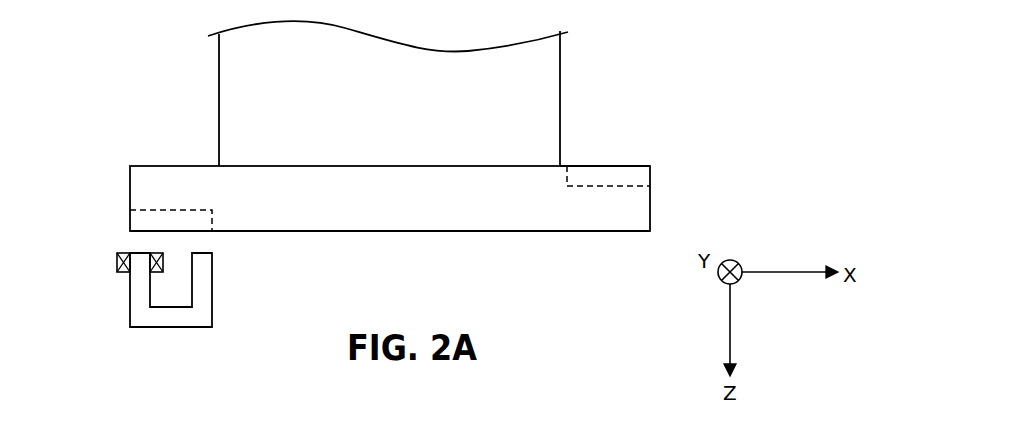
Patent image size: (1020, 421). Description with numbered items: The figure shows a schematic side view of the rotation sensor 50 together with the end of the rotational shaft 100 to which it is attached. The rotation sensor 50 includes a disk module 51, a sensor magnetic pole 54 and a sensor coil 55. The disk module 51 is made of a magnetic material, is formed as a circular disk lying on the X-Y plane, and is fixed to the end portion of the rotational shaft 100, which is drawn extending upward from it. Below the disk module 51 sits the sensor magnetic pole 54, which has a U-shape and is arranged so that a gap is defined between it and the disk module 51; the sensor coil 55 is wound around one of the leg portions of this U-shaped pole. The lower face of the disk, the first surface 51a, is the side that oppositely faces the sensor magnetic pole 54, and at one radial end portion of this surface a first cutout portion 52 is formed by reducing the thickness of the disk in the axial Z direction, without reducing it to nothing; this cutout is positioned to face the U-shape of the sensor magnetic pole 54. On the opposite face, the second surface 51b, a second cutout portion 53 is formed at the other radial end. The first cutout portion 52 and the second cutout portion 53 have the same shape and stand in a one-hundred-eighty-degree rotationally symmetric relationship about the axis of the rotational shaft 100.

The rotational shaft 100 is at (548, 66).
The disk module 51 is at (630, 211).
The first surface 51a is at (588, 232).
The second surface 51b is at (598, 165).
The first cutout portion 52 is at (138, 221).
The second cutout portion 53 is at (640, 177).
The rotation sensor 50 is at (127, 309).
The sensor magnetic pole 54 is at (173, 317).
The sensor coil 55 is at (117, 262).